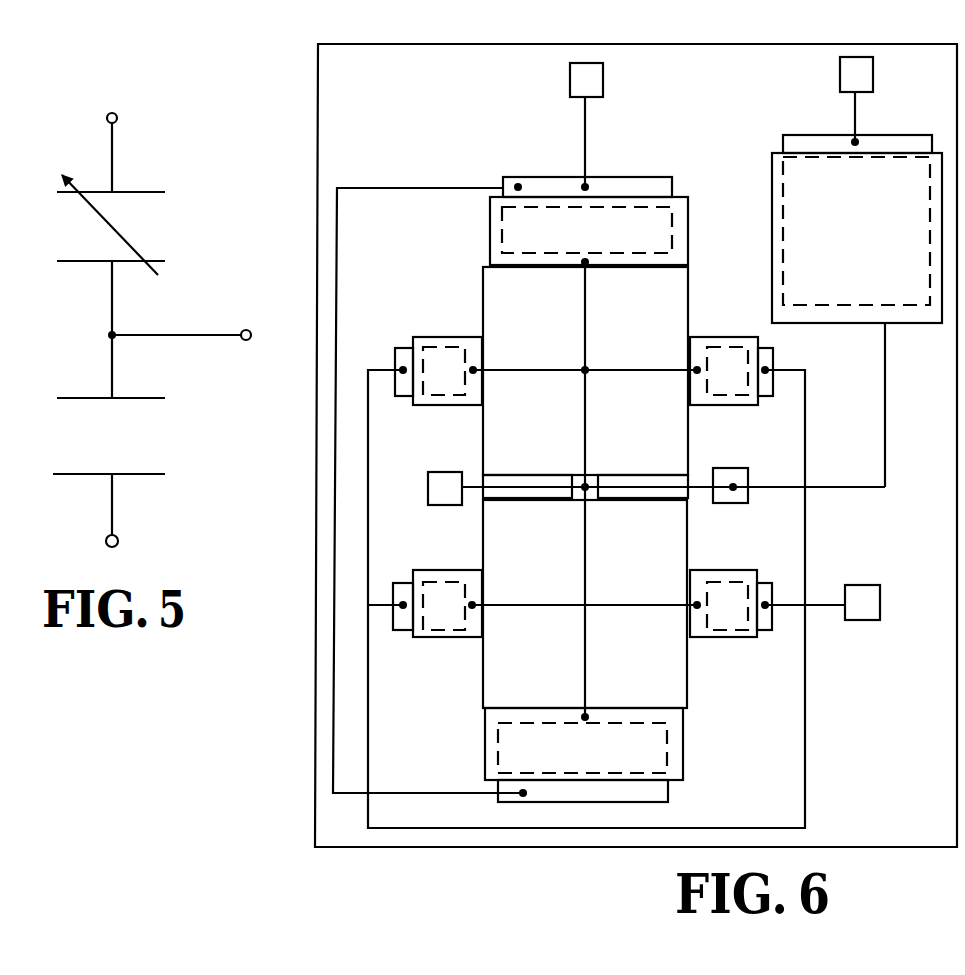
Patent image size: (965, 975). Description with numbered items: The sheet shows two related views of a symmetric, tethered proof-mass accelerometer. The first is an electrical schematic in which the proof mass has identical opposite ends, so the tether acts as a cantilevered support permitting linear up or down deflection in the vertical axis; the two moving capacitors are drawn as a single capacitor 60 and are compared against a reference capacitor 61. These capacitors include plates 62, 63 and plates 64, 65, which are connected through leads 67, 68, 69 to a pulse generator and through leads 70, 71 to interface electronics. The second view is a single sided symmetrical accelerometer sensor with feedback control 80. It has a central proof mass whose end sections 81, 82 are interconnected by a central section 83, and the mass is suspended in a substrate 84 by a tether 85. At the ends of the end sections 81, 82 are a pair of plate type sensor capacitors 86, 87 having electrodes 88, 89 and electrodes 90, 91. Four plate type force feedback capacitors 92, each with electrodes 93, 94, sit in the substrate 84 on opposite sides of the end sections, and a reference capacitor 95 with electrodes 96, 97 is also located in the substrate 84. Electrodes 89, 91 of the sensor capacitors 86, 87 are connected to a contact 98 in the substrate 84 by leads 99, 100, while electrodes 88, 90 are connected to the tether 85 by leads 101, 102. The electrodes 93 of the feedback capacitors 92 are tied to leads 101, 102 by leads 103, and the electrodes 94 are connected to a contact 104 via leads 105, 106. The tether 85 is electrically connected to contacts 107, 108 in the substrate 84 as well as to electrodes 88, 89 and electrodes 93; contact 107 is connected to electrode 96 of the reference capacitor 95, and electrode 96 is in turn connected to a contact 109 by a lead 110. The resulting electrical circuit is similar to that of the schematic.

In FIG. 5, the moving capacitors 60 is at (146, 220).
In FIG. 5, the reference capacitor 61 is at (145, 433).
In FIG. 5, the capacitor plate 62 is at (88, 262).
In FIG. 5, the capacitor plate 63 is at (134, 192).
In FIG. 5, the capacitor plate 64 is at (94, 397).
In FIG. 5, the capacitor plate 65 is at (130, 475).
In FIG. 5, the lead 67 is at (224, 335).
In FIG. 5, the lead 68 is at (113, 306).
In FIG. 5, the lead 69 is at (113, 370).
In FIG. 5, the lead 70 is at (110, 148).
In FIG. 5, the lead 71 is at (112, 516).
In FIG. 6, the single sided symmetrical accelerometer sensor 80 is at (296, 90).
In FIG. 6, the end section 81 is at (646, 573).
In FIG. 6, the end section 82 is at (653, 341).
In FIG. 6, the central section 83 is at (583, 492).
In FIG. 6, the substrate 84 is at (442, 105).
In FIG. 6, the tether 85 is at (535, 487).
In FIG. 6, the sensor capacitor 86 is at (617, 798).
In FIG. 6, the sensor capacitor 87 is at (556, 180).
In FIG. 6, the electrode 88 is at (680, 746).
In FIG. 6, the electrode 89 is at (662, 793).
In FIG. 6, the electrode 90 is at (554, 231).
In FIG. 6, the electrode 91 is at (540, 183).
In FIG. 6, the force feedback capacitors 92 is at (600, 477).
In FIG. 6, the electrode 93 is at (448, 337).
In FIG. 6, the electrode 94 is at (400, 350).
In FIG. 6, the reference capacitor 95 is at (826, 200).
In FIG. 6, the electrode 96 is at (772, 180).
In FIG. 6, the electrode 97 is at (905, 146).
In FIG. 6, the contact 98 is at (570, 81).
In FIG. 6, the lead 99 is at (585, 132).
In FIG. 6, the lead 100 is at (379, 188).
In FIG. 6, the lead 101 is at (586, 666).
In FIG. 6, the lead 102 is at (583, 318).
In FIG. 6, the leads 103 is at (550, 372).
In FIG. 6, the contact 104 is at (863, 620).
In FIG. 6, the lead 105 is at (368, 460).
In FIG. 6, the lead 106 is at (822, 604).
In FIG. 6, the contact 107 is at (742, 503).
In FIG. 6, the contact 108 is at (445, 472).
In FIG. 6, the contact 109 is at (873, 74).
In FIG. 6, the lead 110 is at (855, 107).